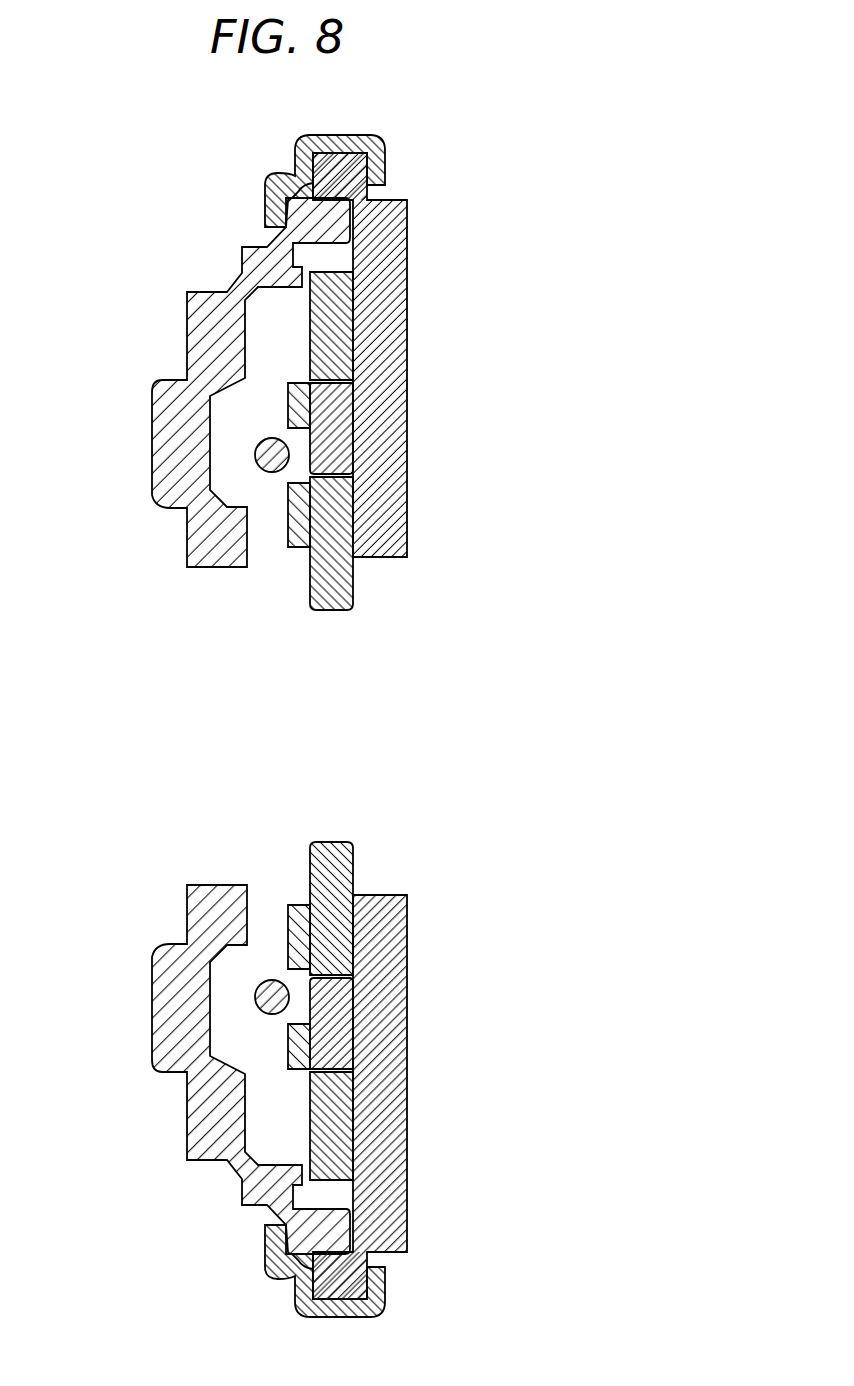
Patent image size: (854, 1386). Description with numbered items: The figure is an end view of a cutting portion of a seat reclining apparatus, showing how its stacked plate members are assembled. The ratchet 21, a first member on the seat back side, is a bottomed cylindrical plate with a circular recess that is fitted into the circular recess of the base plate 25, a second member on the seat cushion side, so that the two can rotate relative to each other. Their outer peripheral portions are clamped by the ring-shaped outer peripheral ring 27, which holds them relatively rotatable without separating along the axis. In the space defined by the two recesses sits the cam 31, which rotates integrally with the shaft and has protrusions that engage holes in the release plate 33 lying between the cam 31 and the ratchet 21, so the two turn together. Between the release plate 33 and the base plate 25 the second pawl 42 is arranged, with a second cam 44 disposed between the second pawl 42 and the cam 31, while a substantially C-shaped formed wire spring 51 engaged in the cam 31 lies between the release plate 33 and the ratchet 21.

The ratchet 21 is at (152, 430).
The base plate 25 is at (410, 473).
The outer peripheral ring 27 is at (385, 160).
The cam 31 is at (352, 597).
The release plate 33 is at (295, 550).
The second pawl 42 is at (343, 327).
The second cam 44 is at (342, 430).
The formed wire spring 51 is at (268, 472).